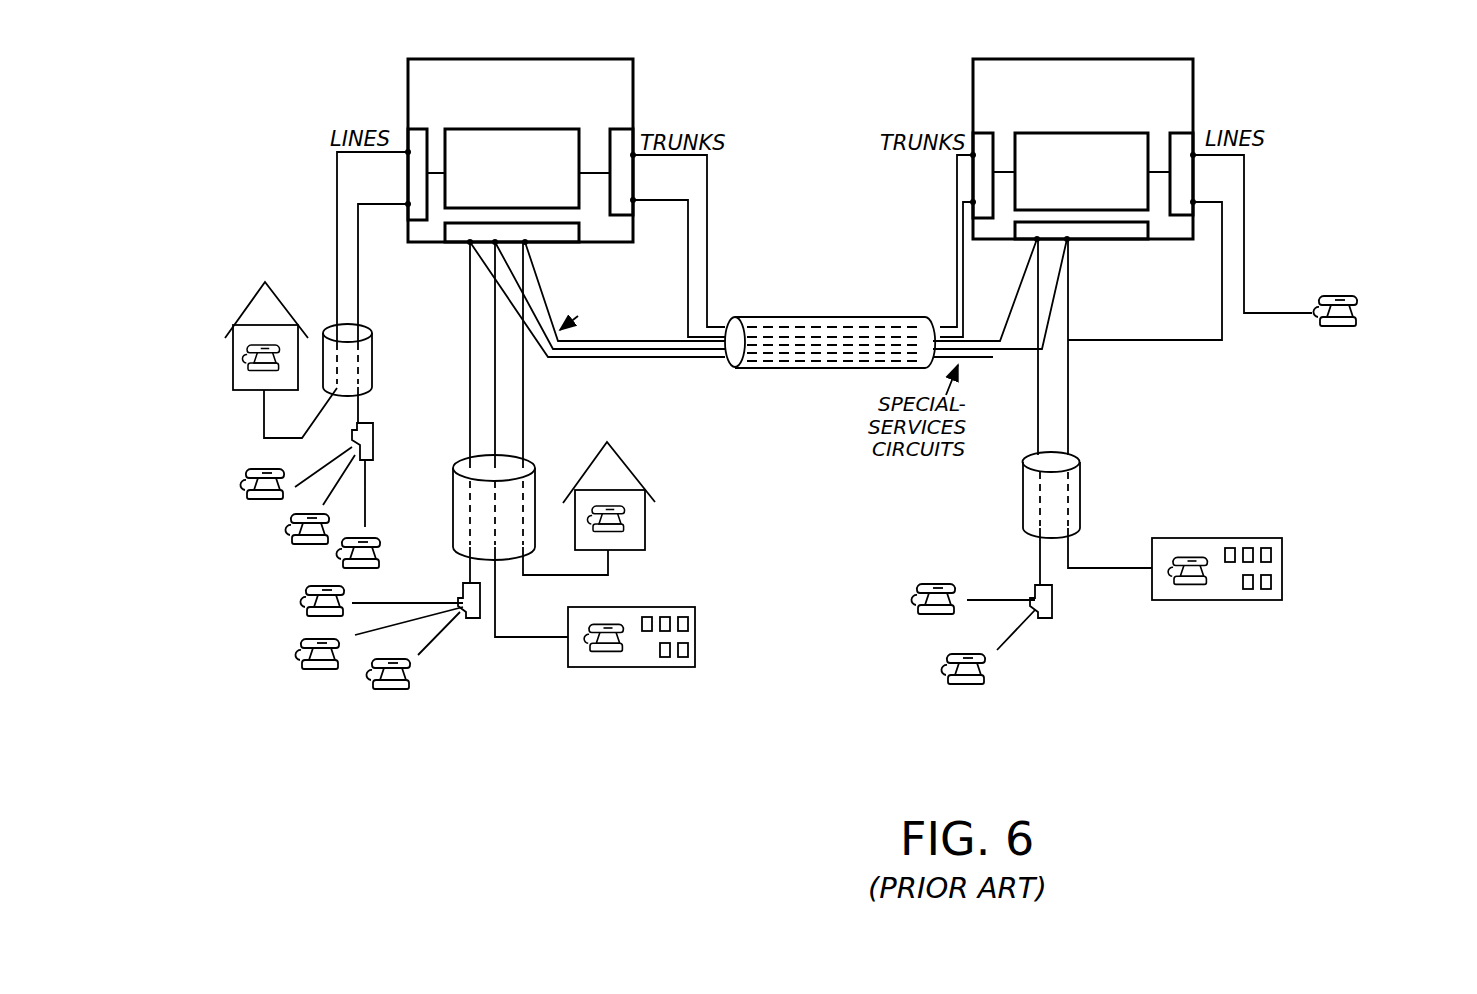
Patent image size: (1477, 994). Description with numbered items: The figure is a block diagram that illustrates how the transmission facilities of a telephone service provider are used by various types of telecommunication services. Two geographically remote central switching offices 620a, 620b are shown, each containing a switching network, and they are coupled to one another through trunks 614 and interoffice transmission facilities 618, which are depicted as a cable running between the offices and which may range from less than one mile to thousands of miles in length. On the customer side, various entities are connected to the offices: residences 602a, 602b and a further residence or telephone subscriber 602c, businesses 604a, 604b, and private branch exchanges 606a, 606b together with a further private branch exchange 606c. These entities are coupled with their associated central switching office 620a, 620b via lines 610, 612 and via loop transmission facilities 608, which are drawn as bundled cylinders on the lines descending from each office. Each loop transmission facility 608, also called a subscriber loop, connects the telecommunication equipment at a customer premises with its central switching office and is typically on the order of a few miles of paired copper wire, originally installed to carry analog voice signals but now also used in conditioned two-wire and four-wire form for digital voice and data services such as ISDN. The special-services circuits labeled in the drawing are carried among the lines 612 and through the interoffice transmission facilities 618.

The central switching office 620a is at (635, 58).
The central switching office 620b is at (1193, 59).
The lines 610 is at (328, 253).
The trunks 614 is at (716, 222).
The interoffice transmission facilities 618 is at (820, 318).
The lines 612 is at (535, 373).
The loop transmission facility 608 is at (374, 356).
The residence 602a is at (243, 322).
The residence 602b is at (634, 462).
The telephone subscriber 602c is at (1363, 306).
The business 604a is at (670, 608).
The business 604b is at (1205, 600).
The private branch exchange 606a is at (375, 440).
The private branch exchange 606b is at (472, 620).
The distribution terminal 606c is at (1055, 610).